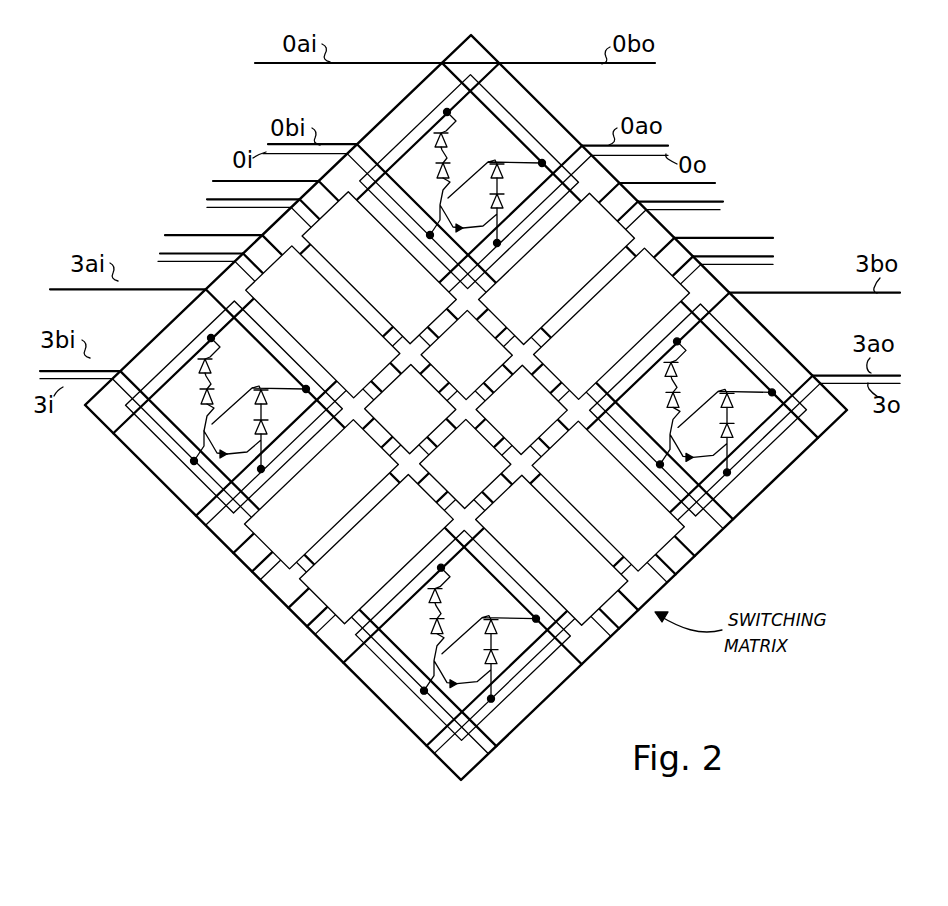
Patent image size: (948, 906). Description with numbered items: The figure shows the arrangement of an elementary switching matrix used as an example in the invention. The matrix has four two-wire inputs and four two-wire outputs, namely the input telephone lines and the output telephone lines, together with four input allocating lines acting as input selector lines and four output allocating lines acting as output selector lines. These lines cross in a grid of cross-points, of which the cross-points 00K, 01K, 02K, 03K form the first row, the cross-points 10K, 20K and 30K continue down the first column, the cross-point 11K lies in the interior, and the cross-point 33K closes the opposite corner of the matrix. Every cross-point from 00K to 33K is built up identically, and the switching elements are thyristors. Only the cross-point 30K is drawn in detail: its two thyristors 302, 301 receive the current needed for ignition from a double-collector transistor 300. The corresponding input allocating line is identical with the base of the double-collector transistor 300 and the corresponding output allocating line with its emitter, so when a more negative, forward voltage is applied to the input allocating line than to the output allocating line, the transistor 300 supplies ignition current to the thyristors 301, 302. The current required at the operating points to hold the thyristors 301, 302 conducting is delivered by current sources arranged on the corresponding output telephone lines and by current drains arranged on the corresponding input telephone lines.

The double-collector transistor 300 is at (190, 452).
The thyristor 301 is at (272, 432).
The thyristor 302 is at (203, 354).
The cross-point 00K is at (469, 182).
The cross-point 01K is at (557, 268).
The cross-point 02K is at (612, 323).
The cross-point 03K is at (698, 410).
The cross-point 10K is at (379, 268).
The cross-point 11K is at (466, 354).
The cross-point 20K is at (323, 322).
The cross-point 30K is at (234, 407).
The cross-point 33K is at (463, 635).